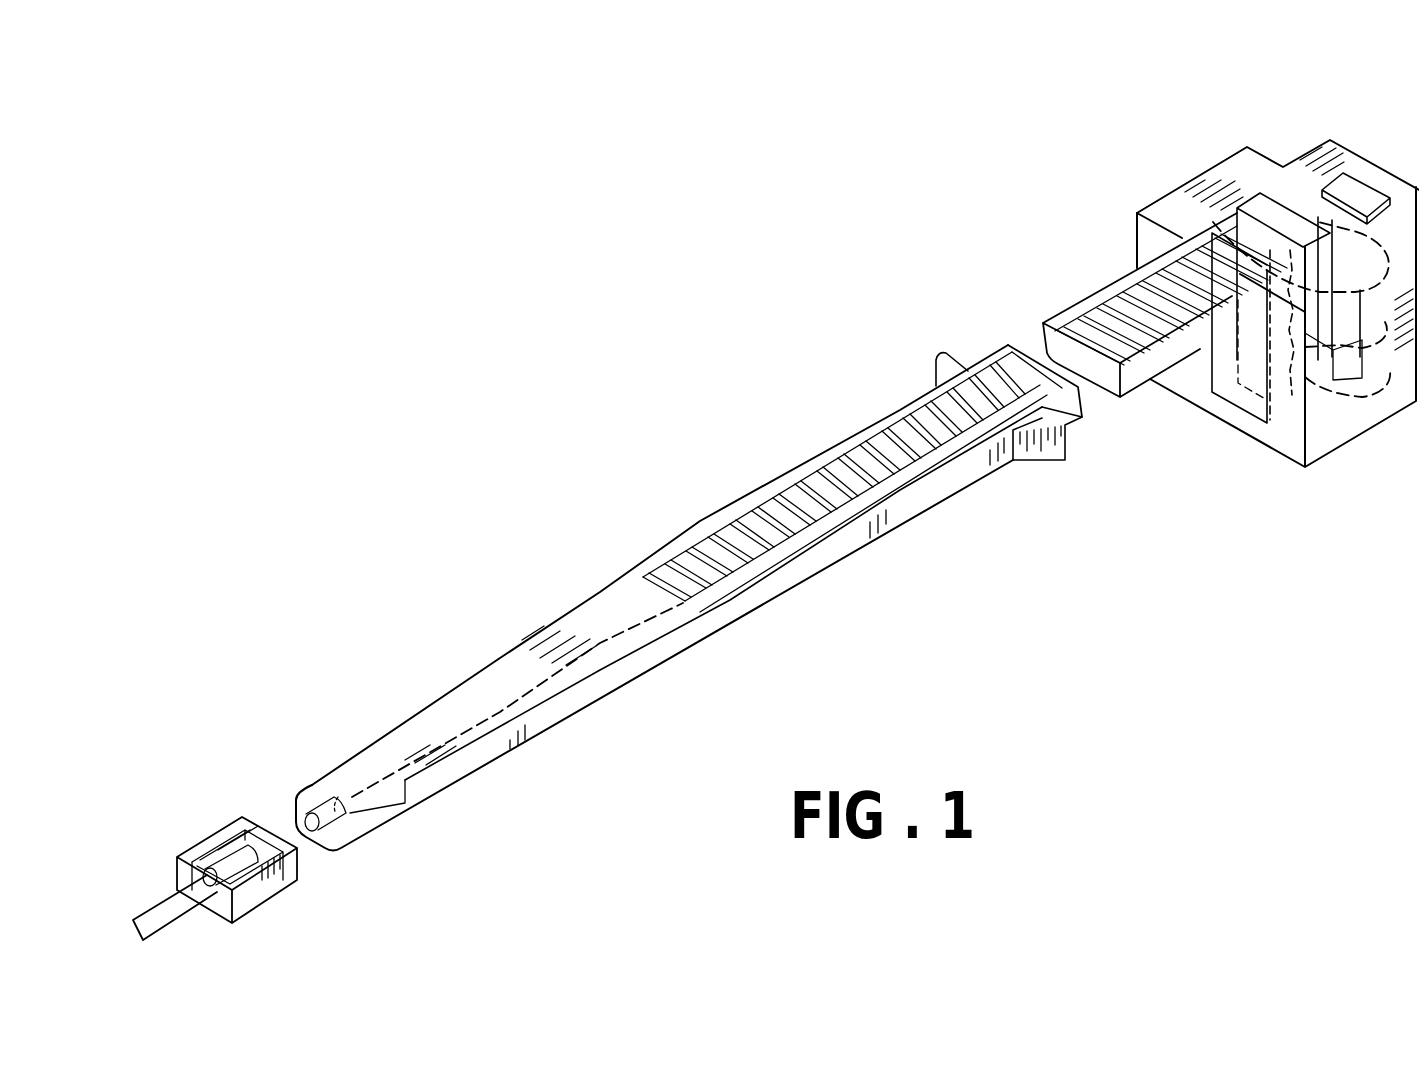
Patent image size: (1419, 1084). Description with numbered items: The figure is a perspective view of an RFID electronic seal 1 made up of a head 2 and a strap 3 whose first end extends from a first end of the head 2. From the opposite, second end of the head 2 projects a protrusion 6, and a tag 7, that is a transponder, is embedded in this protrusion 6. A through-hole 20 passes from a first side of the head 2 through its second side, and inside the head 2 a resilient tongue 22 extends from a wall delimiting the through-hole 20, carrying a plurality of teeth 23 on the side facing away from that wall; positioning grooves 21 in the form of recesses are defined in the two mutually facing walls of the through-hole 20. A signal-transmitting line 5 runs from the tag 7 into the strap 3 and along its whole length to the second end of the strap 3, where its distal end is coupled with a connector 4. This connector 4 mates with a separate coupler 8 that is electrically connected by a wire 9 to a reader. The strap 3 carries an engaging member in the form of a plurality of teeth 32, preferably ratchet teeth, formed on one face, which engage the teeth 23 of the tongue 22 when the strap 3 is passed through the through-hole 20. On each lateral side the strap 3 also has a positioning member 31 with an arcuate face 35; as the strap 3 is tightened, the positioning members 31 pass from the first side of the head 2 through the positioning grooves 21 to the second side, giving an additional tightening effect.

The RFID electronic seal 1 is at (783, 440).
The head 2 is at (1393, 413).
The strap 3 is at (948, 488).
The connector 4 is at (324, 803).
The signal-transmitting line 5 is at (614, 640).
The protrusion 6 is at (1293, 157).
The tag 7 is at (1362, 193).
The coupler 8 is at (232, 836).
The wire 9 is at (152, 910).
The through-hole 20 is at (1277, 227).
The positioning groove 21 is at (1347, 380).
The resilient tongue 22 is at (1253, 378).
The teeth 23 is at (1292, 397).
The positioning member 31 is at (1053, 460).
The teeth 32 is at (717, 557).
The arcuate face 35 is at (1035, 443).